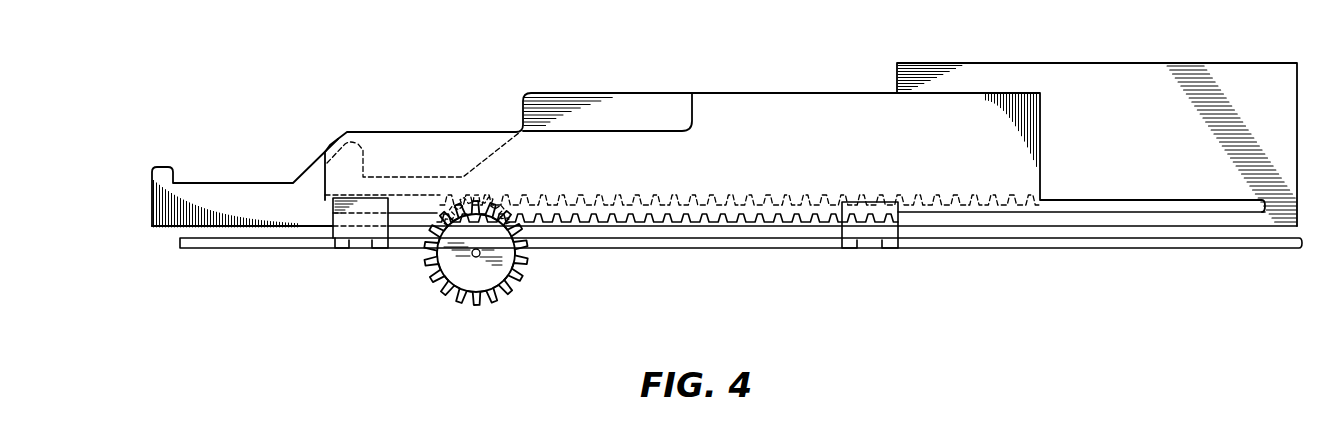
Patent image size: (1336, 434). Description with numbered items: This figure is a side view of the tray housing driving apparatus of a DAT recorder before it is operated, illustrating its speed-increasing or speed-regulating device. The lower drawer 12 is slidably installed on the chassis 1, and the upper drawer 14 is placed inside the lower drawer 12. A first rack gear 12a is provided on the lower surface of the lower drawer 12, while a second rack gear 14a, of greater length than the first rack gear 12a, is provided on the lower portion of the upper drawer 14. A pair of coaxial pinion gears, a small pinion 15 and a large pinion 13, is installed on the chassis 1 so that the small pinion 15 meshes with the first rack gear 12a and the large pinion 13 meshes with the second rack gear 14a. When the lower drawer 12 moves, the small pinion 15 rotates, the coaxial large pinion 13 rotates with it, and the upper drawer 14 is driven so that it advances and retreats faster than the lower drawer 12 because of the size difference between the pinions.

The chassis 1 is at (983, 248).
The lower drawer 12 is at (207, 197).
The first rack gear 12a is at (757, 215).
The large pinion 13 is at (510, 290).
The upper drawer 14 is at (321, 158).
The second rack gear 14a is at (705, 195).
The small pinion 15 is at (450, 283).